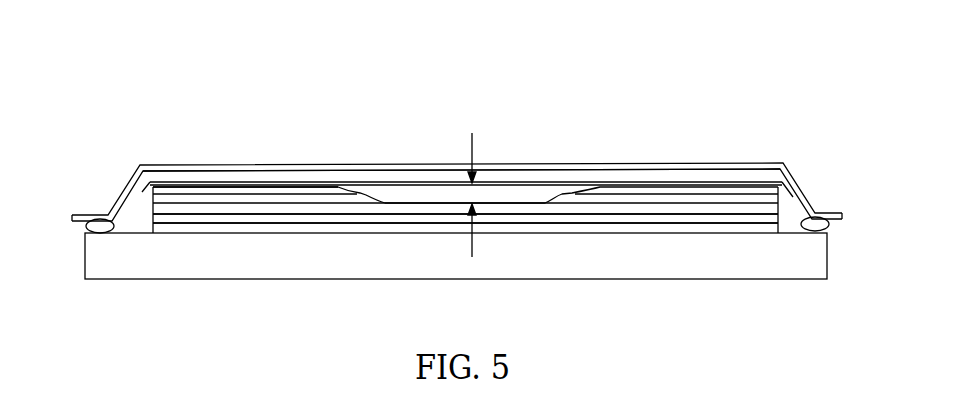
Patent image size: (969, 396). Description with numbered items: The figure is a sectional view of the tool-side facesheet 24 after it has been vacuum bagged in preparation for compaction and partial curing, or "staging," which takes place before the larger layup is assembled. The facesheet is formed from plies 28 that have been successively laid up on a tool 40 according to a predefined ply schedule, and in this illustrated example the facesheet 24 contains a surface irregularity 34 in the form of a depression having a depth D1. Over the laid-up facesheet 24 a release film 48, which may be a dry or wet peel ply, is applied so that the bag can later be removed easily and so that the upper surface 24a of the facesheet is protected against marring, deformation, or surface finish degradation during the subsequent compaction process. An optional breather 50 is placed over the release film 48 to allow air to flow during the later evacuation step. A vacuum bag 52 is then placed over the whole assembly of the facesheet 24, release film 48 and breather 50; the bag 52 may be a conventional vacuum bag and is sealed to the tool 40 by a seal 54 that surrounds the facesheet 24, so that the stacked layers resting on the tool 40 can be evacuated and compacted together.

The tool-side facesheet 24 is at (525, 227).
The upper surface 24a is at (738, 184).
The plies 28 is at (695, 200).
The surface irregularity 34 is at (522, 198).
The tool 40 is at (632, 257).
The release film 48 is at (672, 184).
The breather 50 is at (318, 174).
The vacuum bag 52 is at (230, 165).
The seal 54 is at (100, 227).
The depth D1 is at (478, 183).